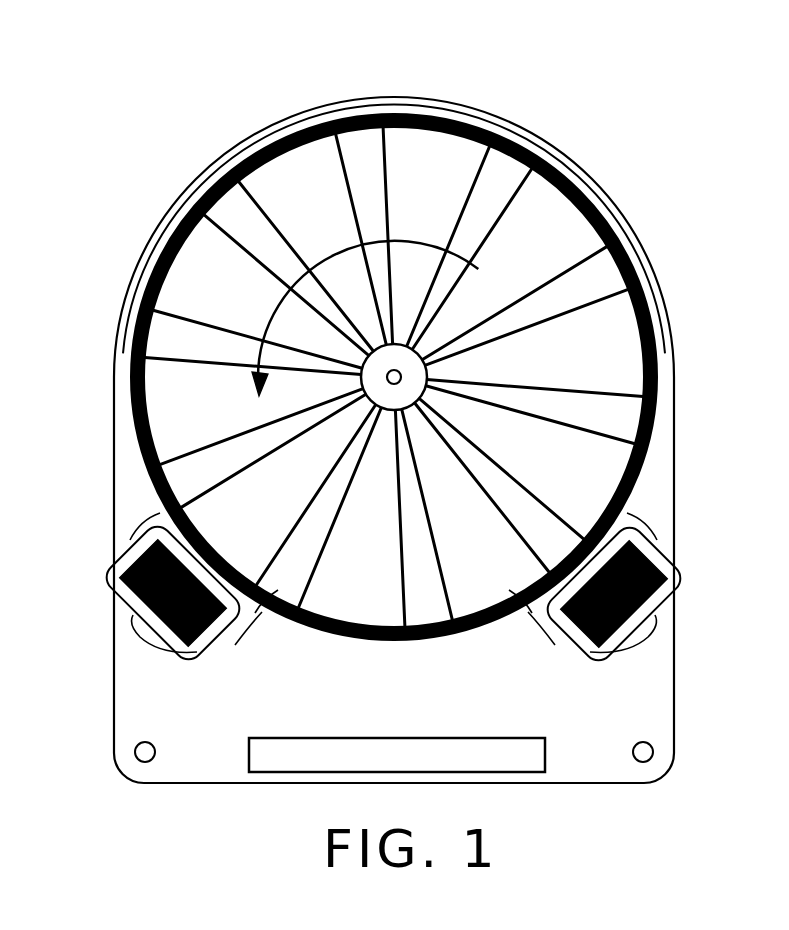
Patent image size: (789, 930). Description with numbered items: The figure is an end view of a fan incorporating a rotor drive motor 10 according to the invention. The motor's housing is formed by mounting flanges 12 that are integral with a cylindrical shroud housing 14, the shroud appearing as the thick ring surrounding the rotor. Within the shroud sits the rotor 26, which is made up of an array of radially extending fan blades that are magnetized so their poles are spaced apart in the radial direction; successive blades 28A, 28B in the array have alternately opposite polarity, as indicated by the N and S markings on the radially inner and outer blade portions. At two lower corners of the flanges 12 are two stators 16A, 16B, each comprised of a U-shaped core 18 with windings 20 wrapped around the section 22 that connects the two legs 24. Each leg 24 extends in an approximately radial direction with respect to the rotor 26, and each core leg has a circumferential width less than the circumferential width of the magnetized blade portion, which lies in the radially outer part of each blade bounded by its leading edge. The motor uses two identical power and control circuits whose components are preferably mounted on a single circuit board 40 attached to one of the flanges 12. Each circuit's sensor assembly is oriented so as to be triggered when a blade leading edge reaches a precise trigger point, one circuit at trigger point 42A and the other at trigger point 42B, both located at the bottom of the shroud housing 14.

The rotor drive motor 10 is at (387, 82).
The mounting flanges 12 is at (647, 728).
The cylindrical shroud housing 14 is at (572, 181).
The stator 16A is at (115, 605).
The stator 16B is at (685, 606).
The U-shaped core 18 is at (130, 537).
The windings 20 is at (135, 600).
The section 22 is at (393, 643).
The legs 24 is at (160, 513).
The rotor 26 is at (360, 158).
The blade 28A is at (577, 243).
The blade 28B is at (607, 322).
The circuit board 40 is at (500, 760).
The trigger point 42A is at (410, 633).
The trigger point 42B is at (320, 633).